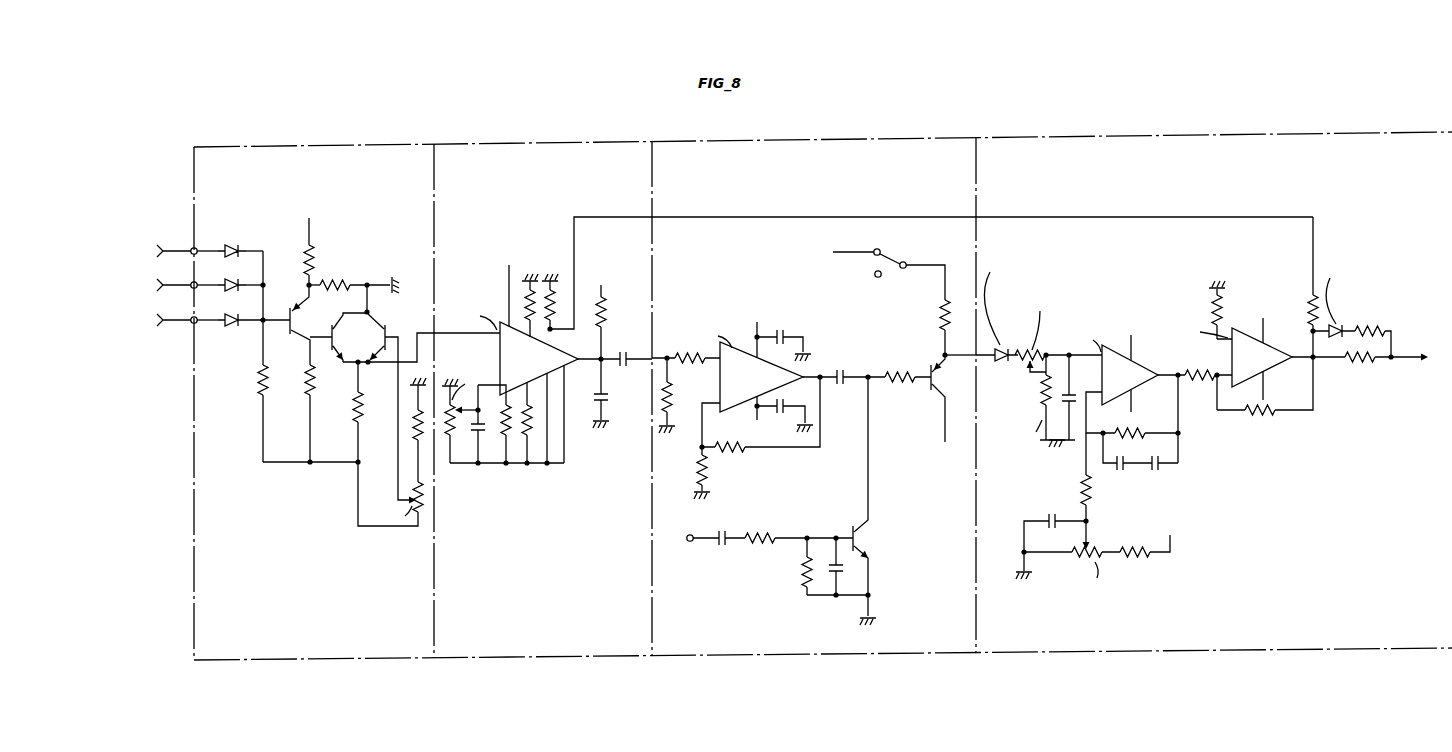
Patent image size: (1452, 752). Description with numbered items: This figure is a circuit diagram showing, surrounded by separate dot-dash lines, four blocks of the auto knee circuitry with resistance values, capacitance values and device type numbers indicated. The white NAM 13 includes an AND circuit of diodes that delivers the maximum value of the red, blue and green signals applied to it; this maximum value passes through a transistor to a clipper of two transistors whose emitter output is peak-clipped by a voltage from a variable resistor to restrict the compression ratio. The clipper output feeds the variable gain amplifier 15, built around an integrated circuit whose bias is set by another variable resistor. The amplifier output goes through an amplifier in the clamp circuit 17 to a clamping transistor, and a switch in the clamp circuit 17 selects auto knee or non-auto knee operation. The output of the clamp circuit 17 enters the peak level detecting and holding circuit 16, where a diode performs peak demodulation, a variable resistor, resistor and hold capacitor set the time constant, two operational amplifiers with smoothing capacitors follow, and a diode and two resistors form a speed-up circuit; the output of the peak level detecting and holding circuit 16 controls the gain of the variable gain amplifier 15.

The white NAM 13 is at (346, 147).
The variable gain amplifier 15 is at (556, 145).
The clamp circuit 17 is at (846, 141).
The peak level detecting and holding circuit 16 is at (1172, 134).